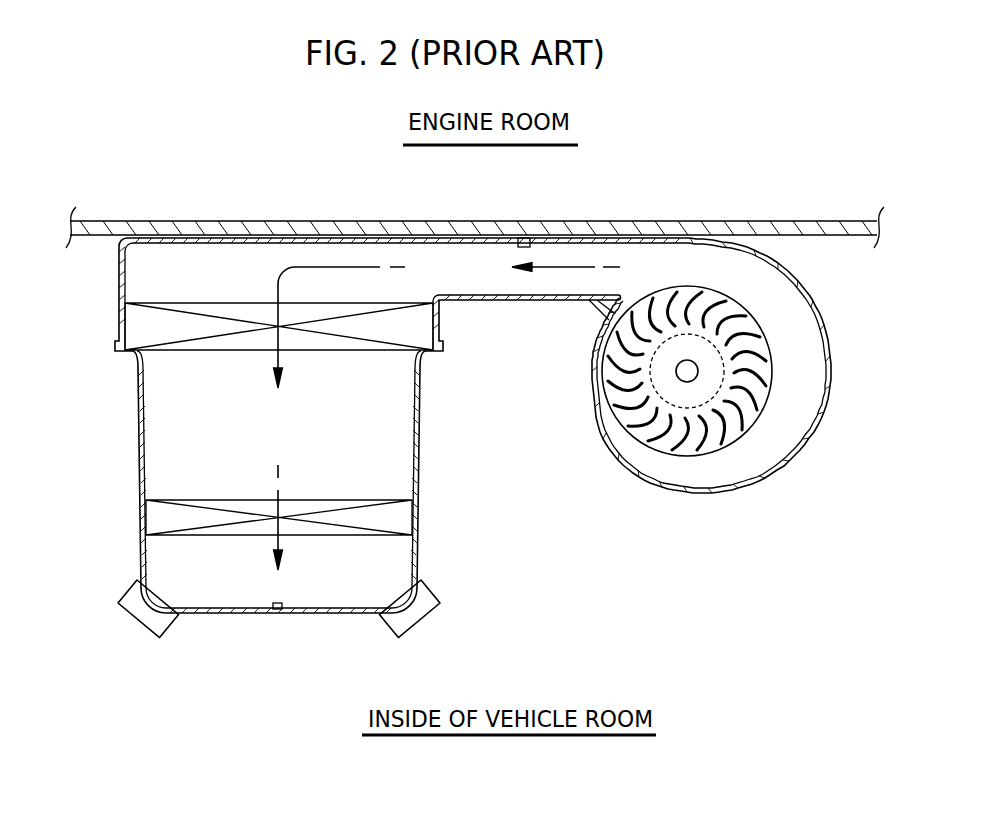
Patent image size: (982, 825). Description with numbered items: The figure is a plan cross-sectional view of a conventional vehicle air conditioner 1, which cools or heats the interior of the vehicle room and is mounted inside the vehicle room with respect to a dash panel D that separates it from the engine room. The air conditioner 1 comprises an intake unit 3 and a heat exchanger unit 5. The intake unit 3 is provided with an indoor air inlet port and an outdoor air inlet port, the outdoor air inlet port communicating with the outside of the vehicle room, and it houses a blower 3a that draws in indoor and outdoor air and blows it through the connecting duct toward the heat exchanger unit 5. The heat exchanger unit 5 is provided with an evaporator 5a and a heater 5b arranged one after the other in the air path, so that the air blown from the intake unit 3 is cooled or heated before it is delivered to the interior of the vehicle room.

The dash panel D is at (128, 222).
The air conditioner 1 is at (607, 555).
The intake unit 3 is at (723, 490).
The blower 3a is at (745, 398).
The heat exchanger unit 5 is at (418, 478).
The evaporator 5a is at (148, 327).
The heater 5b is at (165, 520).